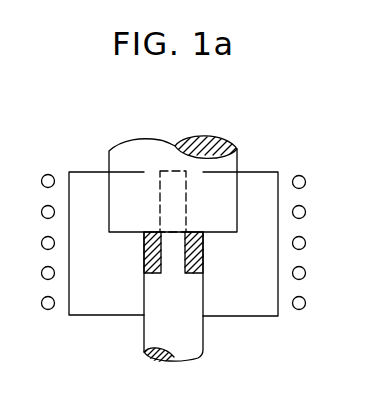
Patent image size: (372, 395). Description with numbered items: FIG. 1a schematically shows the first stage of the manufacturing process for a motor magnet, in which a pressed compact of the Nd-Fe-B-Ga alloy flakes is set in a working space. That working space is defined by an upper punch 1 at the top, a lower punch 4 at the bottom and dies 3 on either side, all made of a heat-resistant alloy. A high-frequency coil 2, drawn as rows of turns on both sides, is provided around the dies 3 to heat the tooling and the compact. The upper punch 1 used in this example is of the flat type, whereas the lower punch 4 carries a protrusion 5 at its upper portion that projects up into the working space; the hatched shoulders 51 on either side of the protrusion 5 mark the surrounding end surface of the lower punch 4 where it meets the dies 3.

The upper punch 1 is at (215, 177).
The high-frequency coil 2 is at (305, 275).
The dies 3 is at (238, 298).
The lower punch 4 is at (185, 343).
The protrusion 5 is at (175, 267).
The end portion of rod 51 is at (145, 253).